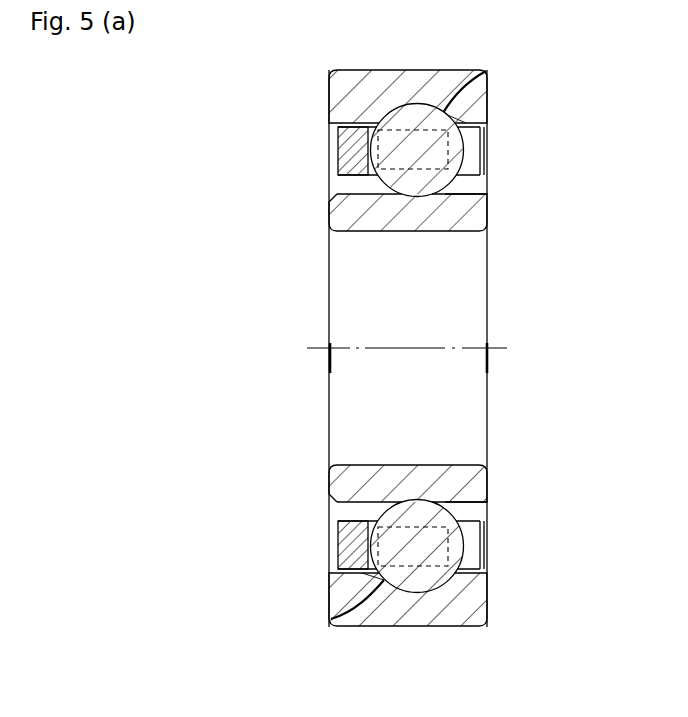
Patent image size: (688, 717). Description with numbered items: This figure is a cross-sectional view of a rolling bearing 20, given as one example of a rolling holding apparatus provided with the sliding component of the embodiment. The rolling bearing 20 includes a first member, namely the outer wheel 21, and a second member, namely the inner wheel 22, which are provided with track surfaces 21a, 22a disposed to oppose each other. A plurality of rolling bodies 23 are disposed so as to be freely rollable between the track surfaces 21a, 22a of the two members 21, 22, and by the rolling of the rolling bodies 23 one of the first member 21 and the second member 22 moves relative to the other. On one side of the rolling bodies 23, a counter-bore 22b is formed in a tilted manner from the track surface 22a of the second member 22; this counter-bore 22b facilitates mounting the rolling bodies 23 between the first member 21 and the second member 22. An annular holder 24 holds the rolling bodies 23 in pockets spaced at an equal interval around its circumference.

The rolling bearing 20 is at (321, 60).
The first member (outer wheel) 21 is at (408, 82).
The track surface of the first member 21a is at (484, 70).
The second member (inner wheel) 22 is at (400, 223).
The track surface of the second member 22a is at (450, 183).
The counter-bore 22b is at (338, 200).
The rolling bodies 23 is at (431, 117).
The holder 24 is at (337, 153).